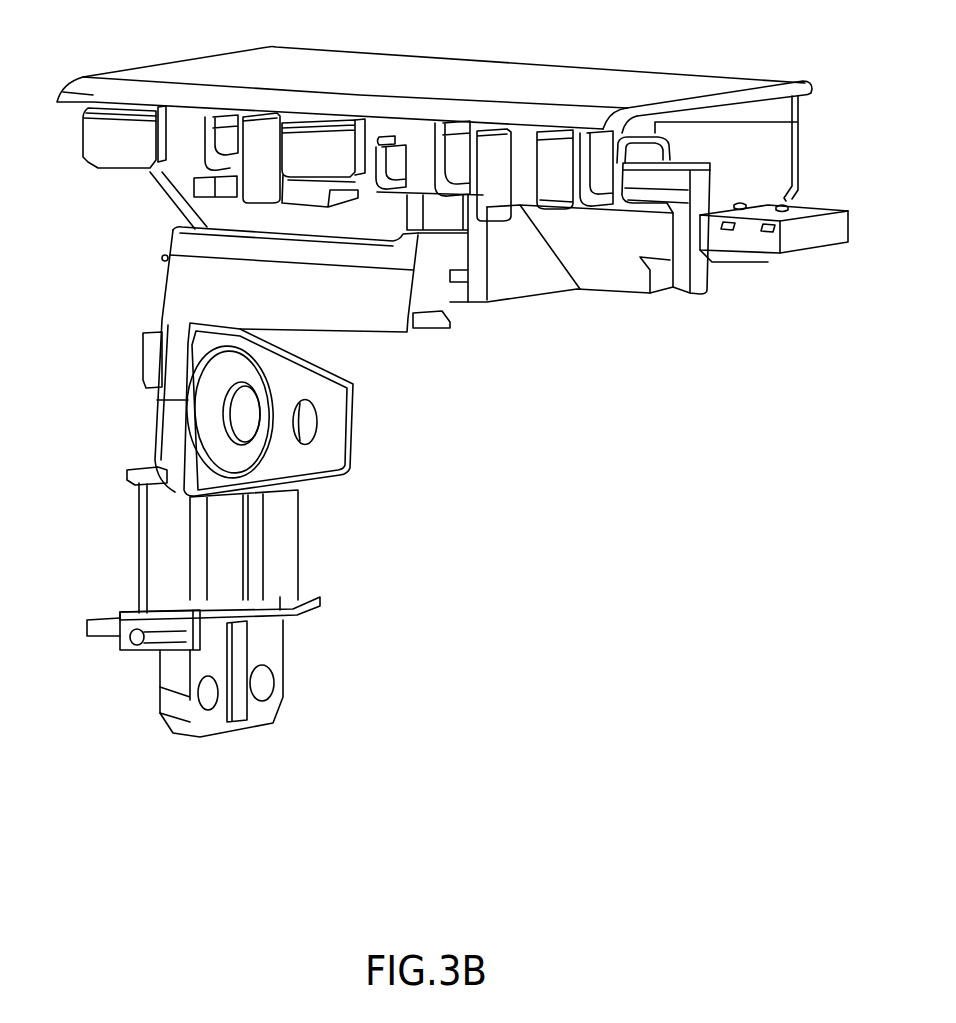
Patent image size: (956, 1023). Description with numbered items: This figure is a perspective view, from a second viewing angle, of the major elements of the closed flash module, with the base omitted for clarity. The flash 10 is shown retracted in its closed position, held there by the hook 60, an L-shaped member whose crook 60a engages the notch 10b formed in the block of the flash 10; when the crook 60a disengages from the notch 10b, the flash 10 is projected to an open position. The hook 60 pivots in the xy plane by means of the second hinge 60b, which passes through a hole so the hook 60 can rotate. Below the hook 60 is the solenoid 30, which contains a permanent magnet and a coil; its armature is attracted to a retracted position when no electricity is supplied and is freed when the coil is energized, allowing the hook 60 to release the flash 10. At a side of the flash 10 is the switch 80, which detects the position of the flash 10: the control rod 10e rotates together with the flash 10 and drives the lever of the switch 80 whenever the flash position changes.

The flash 10 is at (549, 53).
The notch 10b is at (440, 216).
The control rod 10e is at (673, 293).
The solenoid 30 is at (315, 572).
The hook 60 is at (316, 345).
The crook 60a is at (453, 252).
The second hinge 60b is at (238, 417).
The switch 80 is at (797, 262).